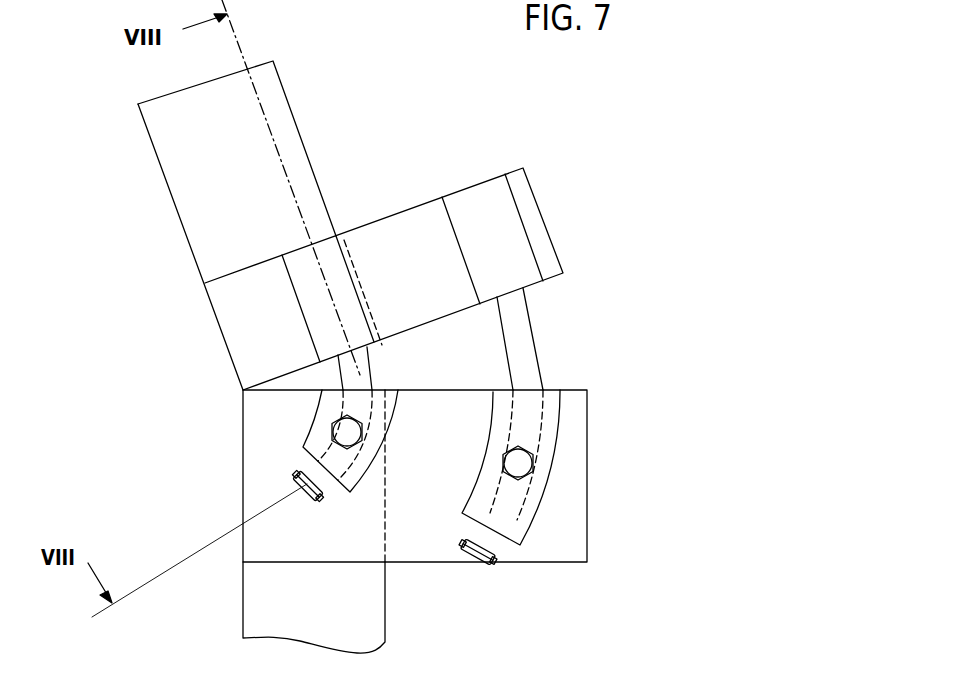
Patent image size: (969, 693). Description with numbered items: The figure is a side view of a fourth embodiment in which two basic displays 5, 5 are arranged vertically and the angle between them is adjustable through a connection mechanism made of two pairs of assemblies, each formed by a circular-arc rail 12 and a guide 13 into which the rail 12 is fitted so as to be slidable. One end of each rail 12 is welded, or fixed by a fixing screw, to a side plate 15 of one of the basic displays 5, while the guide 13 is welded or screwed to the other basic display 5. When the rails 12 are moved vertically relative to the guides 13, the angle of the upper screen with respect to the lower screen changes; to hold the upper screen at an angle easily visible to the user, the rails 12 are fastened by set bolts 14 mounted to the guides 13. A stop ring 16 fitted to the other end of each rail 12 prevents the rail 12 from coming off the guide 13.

The basic display 5 is at (172, 200).
The circular-arc rail 12 is at (360, 370).
The guide 13 is at (378, 420).
The set bolt 14 is at (333, 428).
The side plate 15 is at (537, 220).
The stop ring 16 is at (297, 474).